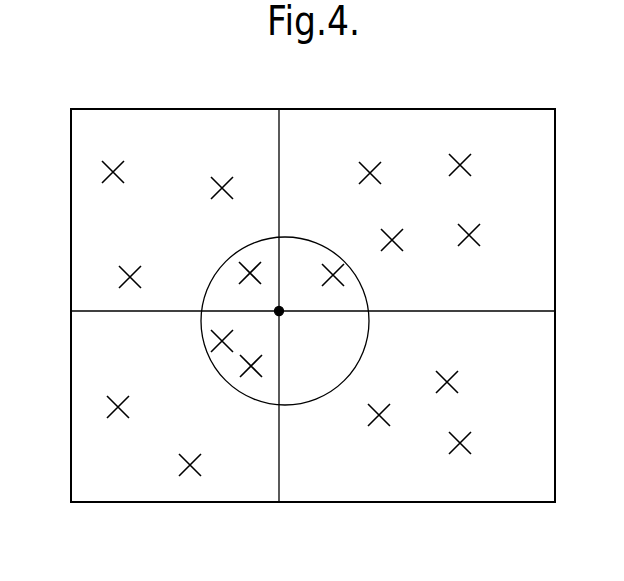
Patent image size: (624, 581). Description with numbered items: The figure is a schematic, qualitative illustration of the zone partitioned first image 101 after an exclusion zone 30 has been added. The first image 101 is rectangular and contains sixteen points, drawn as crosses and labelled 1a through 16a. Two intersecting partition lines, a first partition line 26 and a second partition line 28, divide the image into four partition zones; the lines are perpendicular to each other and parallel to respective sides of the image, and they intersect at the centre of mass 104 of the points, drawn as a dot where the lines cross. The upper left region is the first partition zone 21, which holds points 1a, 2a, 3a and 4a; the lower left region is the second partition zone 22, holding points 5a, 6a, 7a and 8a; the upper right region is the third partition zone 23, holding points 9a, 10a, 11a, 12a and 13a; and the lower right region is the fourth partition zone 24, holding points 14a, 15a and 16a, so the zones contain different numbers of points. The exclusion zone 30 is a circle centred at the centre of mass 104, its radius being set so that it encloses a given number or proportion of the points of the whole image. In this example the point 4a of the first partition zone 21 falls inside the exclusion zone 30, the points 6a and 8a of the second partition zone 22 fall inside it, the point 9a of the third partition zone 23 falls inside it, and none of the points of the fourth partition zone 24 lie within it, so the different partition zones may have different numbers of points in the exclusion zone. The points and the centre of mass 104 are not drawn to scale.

The first image 101 is at (472, 109).
The first partition zone 21 is at (78, 200).
The second partition zone 22 is at (85, 457).
The third partition zone 23 is at (540, 228).
The fourth partition zone 24 is at (535, 433).
The first partition line 26 is at (282, 131).
The second partition line 28 is at (542, 316).
The exclusion zone 30 is at (354, 372).
The centre of mass 104 is at (282, 315).
The point 1a is at (115, 160).
The point 2a is at (224, 178).
The point 3a is at (131, 266).
The point 4a is at (250, 262).
The point 5a is at (118, 397).
The point 6a is at (212, 340).
The point 7a is at (180, 465).
The point 8a is at (255, 378).
The point 9a is at (331, 264).
The point 10a is at (360, 168).
The point 11a is at (470, 165).
The point 12a is at (397, 230).
The point 13a is at (472, 227).
The point 14a is at (376, 428).
The point 15a is at (460, 383).
The point 16a is at (465, 455).